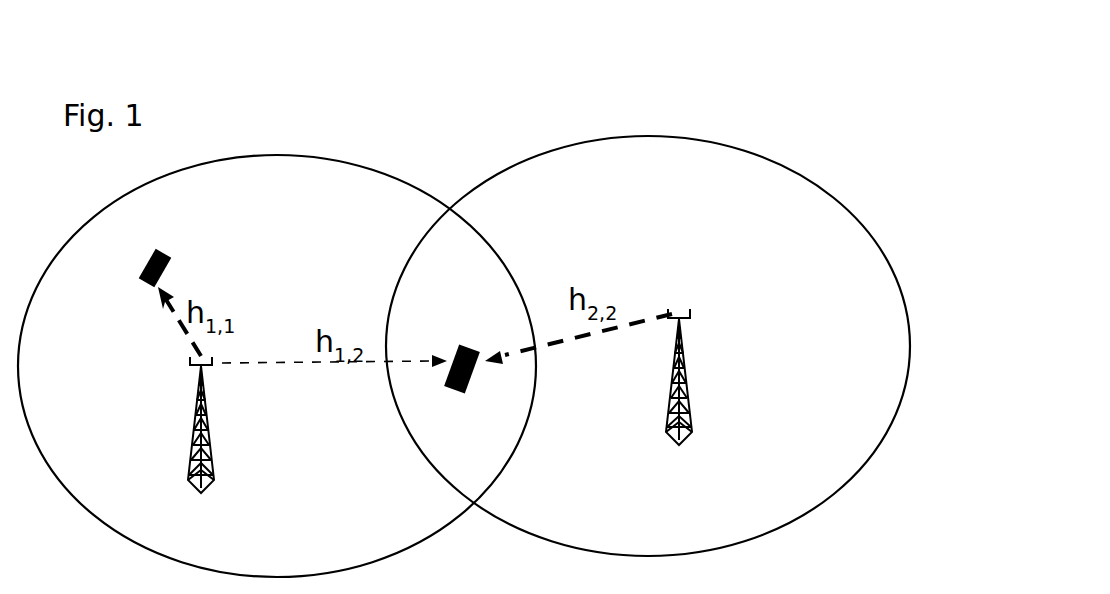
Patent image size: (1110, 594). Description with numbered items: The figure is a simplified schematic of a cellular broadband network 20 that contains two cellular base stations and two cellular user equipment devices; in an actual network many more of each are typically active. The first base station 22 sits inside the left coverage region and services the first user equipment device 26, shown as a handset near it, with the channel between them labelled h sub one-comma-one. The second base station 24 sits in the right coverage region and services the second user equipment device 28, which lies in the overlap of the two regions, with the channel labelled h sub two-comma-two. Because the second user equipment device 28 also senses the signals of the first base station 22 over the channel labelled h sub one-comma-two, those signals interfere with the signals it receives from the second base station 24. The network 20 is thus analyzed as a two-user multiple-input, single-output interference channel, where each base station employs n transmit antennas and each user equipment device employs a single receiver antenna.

The cellular network 20 is at (724, 74).
The cellular base station BS1 22 is at (188, 470).
The cellular base station BS2 24 is at (662, 423).
The cellular user equipment device UE1 26 is at (153, 251).
The cellular user equipment device UE2 28 is at (460, 346).